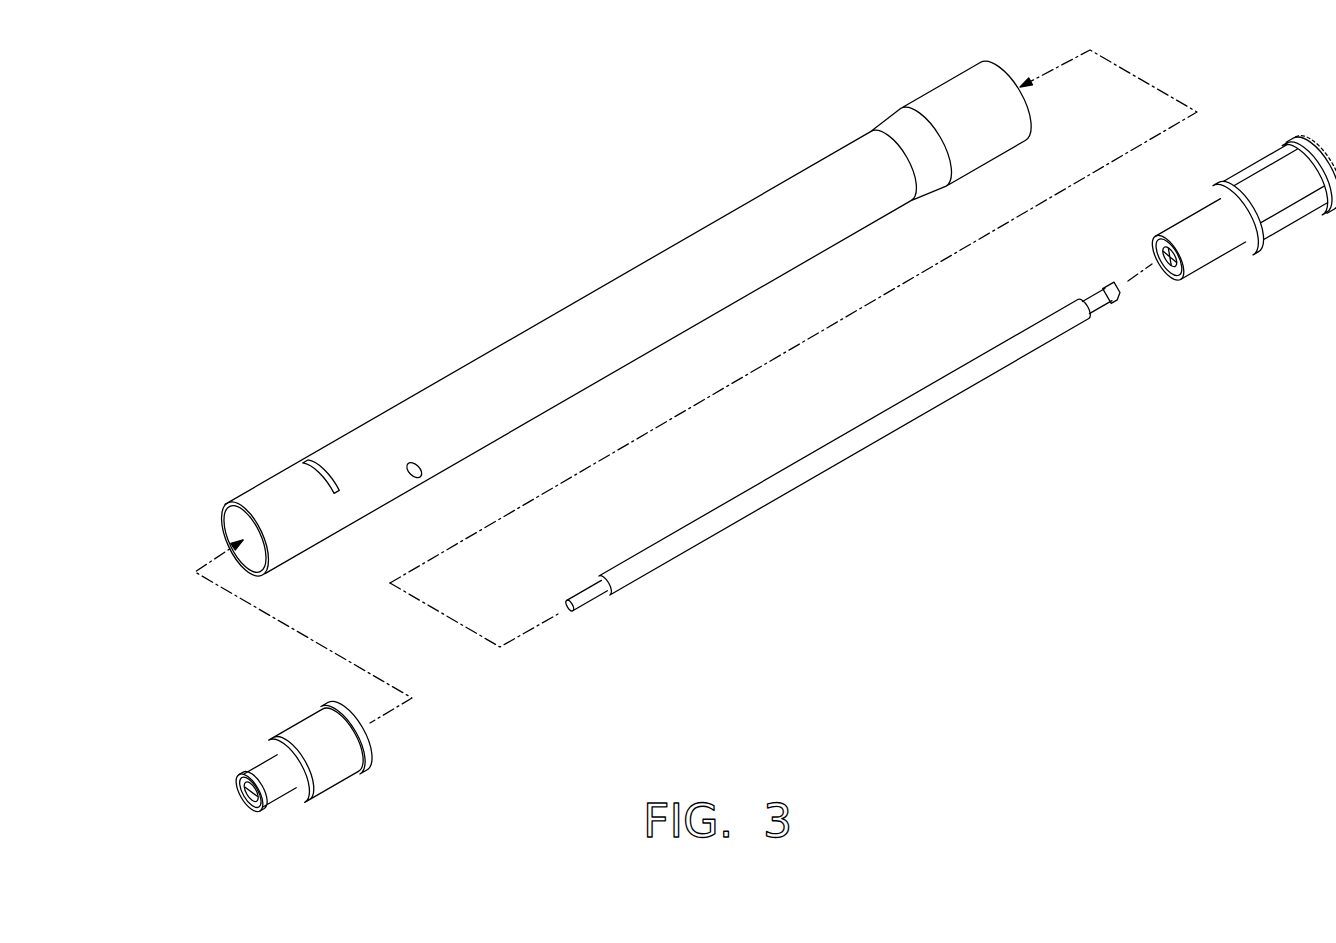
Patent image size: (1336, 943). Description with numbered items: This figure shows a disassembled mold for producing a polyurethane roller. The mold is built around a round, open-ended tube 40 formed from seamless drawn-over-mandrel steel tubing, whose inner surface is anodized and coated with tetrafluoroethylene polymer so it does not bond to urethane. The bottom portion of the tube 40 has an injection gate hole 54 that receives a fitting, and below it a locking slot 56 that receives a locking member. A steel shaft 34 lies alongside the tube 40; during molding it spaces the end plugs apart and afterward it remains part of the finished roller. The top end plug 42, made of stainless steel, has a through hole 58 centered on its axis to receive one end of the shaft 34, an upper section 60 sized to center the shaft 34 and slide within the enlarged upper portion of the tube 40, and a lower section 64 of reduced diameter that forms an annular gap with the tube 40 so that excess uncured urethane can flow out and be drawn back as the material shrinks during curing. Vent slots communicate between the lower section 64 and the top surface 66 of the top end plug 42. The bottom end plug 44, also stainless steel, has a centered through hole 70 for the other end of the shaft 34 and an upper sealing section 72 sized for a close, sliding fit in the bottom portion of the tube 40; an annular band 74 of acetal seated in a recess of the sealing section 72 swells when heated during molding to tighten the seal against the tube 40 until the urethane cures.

The steel shaft 34 is at (873, 445).
The tube 40 is at (550, 312).
The top end plug 42 is at (1204, 226).
The bottom end plug 44 is at (294, 754).
The injection gate hole 54 is at (412, 478).
The locking slot 56 is at (325, 462).
The through hole 58 is at (1150, 257).
The upper section 60 is at (1267, 183).
The lower section 64 is at (1173, 218).
The top surface 66 is at (1322, 147).
The through hole 70 is at (237, 795).
The upper sealing section 72 is at (367, 745).
The annular band 74 is at (325, 777).